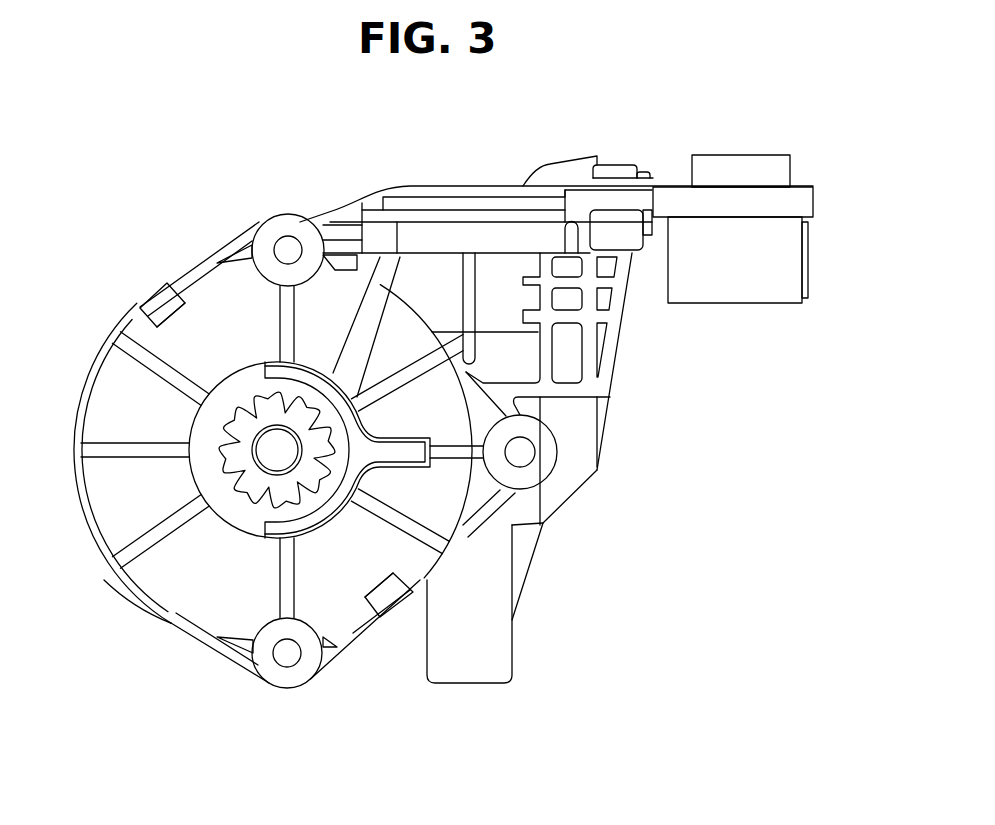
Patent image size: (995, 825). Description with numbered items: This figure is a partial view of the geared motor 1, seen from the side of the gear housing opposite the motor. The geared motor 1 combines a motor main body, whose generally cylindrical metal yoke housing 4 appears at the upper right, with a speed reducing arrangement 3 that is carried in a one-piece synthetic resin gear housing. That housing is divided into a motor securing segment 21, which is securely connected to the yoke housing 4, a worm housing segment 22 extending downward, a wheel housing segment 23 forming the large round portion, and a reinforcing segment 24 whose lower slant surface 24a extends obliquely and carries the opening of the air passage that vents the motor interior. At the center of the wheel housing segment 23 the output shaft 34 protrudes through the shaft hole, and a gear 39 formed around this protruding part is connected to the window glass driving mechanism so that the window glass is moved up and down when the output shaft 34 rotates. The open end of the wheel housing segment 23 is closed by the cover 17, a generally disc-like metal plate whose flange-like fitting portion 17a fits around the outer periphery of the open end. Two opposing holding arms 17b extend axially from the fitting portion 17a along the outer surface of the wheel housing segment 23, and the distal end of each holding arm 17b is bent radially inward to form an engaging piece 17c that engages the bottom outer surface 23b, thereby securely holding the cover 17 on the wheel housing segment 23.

The geared motor 1 is at (246, 163).
The speed reducing arrangement 3 is at (620, 353).
The yoke housing 4 is at (562, 165).
The cover 17 is at (120, 580).
The fitting portion 17a is at (143, 607).
The holding arm 17b is at (157, 290).
The engaging piece 17c is at (165, 313).
The motor securing segment 21 is at (630, 237).
The worm housing segment 22 is at (492, 683).
The wheel housing segment 23 is at (93, 495).
The bottom outer surface 23b is at (100, 393).
The reinforcing segment 24 is at (603, 417).
The lower slant surface 24a is at (573, 498).
The output shaft 34 is at (260, 448).
The gear 39 is at (253, 490).